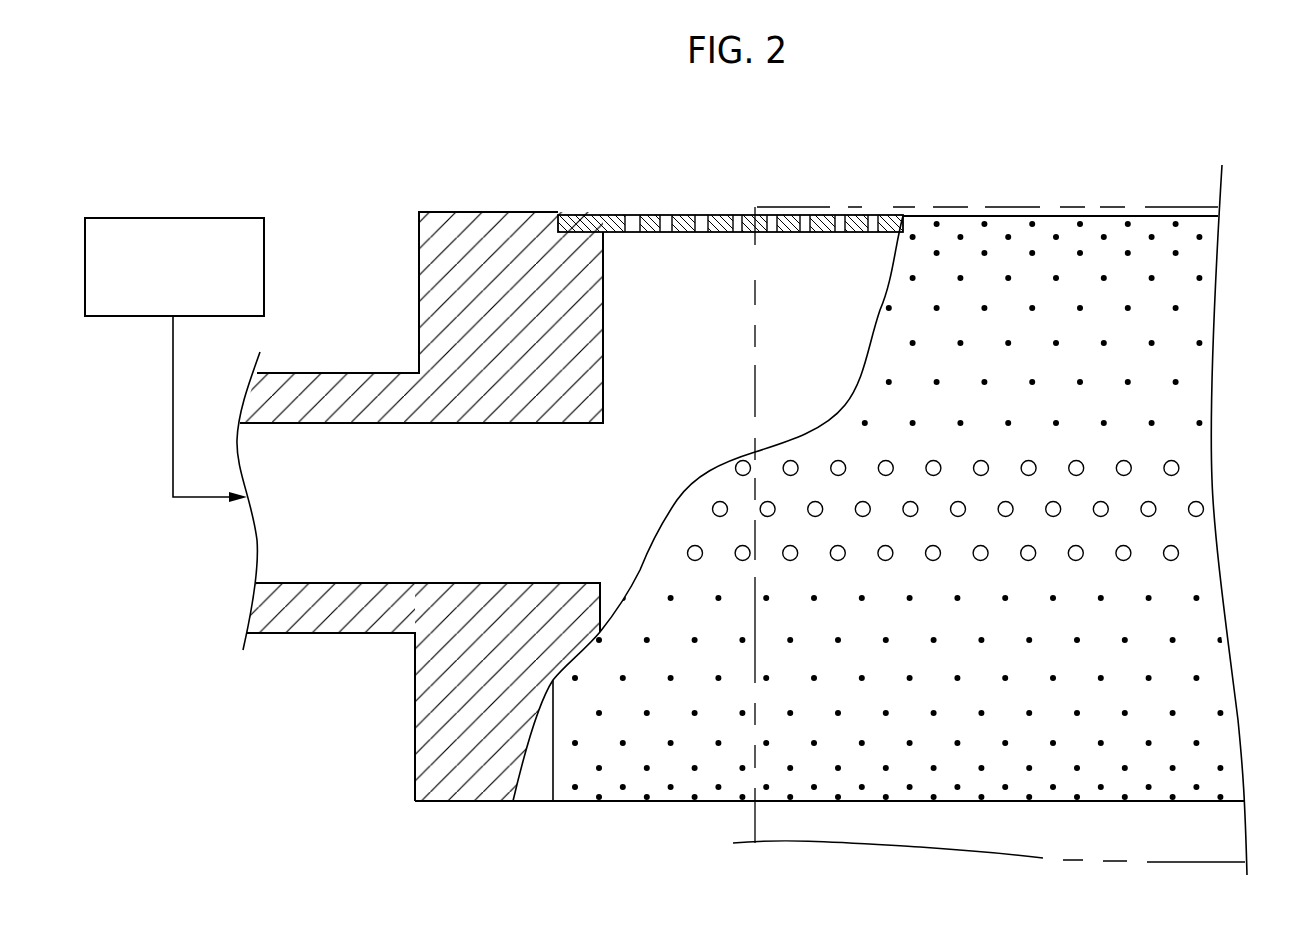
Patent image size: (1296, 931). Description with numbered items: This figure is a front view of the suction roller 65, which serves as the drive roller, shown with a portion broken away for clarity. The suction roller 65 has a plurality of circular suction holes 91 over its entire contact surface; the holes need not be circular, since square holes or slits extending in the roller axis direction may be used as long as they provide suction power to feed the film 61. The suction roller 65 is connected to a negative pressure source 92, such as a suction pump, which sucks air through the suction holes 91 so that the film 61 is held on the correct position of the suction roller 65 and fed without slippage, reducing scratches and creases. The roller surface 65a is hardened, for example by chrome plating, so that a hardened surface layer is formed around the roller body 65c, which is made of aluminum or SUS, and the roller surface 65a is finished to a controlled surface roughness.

The film 61 is at (752, 818).
The suction roller 65 is at (957, 158).
The roller surface 65a is at (653, 213).
The roller body 65c is at (712, 236).
The suction holes 91 is at (838, 220).
The negative pressure source 92 is at (218, 218).